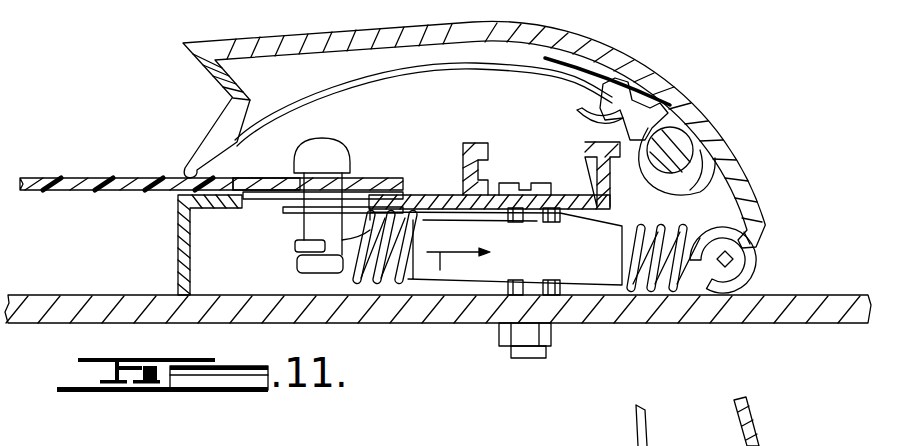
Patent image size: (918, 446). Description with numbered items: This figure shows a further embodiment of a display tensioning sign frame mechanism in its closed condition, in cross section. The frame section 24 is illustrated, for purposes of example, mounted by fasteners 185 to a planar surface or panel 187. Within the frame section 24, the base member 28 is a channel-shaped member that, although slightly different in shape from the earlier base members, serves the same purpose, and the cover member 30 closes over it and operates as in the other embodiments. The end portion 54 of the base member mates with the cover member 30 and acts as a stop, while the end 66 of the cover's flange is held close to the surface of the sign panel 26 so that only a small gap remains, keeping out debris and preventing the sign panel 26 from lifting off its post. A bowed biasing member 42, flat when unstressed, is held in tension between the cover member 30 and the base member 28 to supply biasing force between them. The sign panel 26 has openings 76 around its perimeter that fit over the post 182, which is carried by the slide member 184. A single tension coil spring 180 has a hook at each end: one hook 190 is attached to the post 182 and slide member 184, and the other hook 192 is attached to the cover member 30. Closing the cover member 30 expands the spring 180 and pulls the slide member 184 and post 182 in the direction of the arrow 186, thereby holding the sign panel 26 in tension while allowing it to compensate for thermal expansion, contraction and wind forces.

The frame section 24 is at (759, 128).
The sign panel 26 is at (42, 177).
The base member 28 is at (177, 284).
The cover member 30 is at (669, 85).
The biasing member 42 is at (461, 66).
The end portion 54 is at (639, 70).
The end of flange member 66 is at (188, 166).
The openings 76 is at (248, 176).
The tension coil spring 180 is at (628, 290).
The post 182 is at (329, 150).
The slide member 184 is at (288, 218).
The fasteners 185 is at (533, 358).
The arrow 186 is at (440, 252).
The planar surface or panel 187 is at (827, 311).
The hook 190 is at (295, 252).
The hook 192 is at (757, 268).